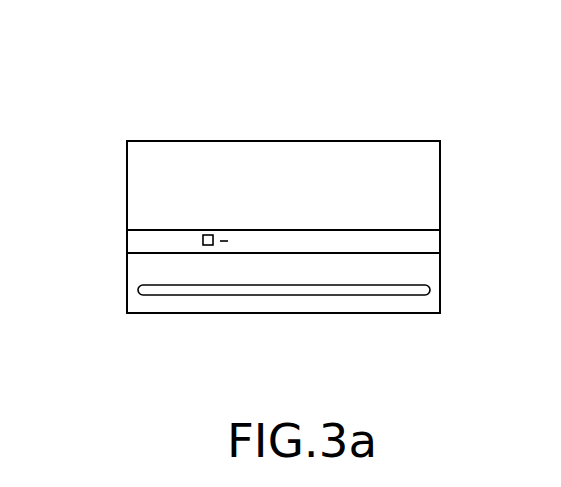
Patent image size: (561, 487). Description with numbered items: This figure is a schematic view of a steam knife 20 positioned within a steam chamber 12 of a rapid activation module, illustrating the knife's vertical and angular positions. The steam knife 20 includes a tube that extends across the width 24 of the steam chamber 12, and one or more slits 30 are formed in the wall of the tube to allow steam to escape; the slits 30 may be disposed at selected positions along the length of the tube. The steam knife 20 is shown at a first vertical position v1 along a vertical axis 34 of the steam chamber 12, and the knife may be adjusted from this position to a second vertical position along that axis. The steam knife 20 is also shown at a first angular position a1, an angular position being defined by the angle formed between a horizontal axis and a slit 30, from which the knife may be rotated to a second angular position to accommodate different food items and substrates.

The steam chamber 12 is at (270, 118).
The steam knife 20 is at (337, 229).
The slit 30 is at (207, 234).
The first angular position a1 is at (224, 242).
The first vertical position v1 is at (127, 243).
The vertical axis 34 is at (448, 141).
The width 24 is at (441, 318).